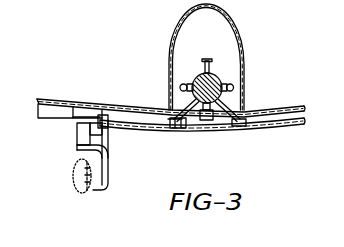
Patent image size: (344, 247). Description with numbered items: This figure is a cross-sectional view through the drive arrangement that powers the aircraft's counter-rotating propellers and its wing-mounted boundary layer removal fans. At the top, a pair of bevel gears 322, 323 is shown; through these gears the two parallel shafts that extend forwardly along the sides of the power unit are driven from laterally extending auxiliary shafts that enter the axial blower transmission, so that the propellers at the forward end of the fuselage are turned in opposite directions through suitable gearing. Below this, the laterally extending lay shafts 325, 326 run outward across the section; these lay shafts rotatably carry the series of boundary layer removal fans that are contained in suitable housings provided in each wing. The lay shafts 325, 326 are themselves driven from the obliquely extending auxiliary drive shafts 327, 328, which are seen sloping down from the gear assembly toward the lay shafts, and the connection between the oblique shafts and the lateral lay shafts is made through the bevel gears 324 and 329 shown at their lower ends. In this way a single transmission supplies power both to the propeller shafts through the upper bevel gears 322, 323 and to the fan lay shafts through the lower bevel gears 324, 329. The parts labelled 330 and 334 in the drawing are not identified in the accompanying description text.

The bevel gear 322 is at (232, 84).
The bevel gear 323 is at (182, 84).
The bevel gear 324 is at (182, 131).
The lay shaft 325 is at (180, 129).
The lay shaft 326 is at (277, 122).
The auxiliary drive shaft 327 is at (182, 101).
The auxiliary drive shaft 328 is at (228, 105).
The bevel gear 329 is at (240, 126).
The base block 330 is at (214, 123).
The wire loop 334 is at (246, 112).